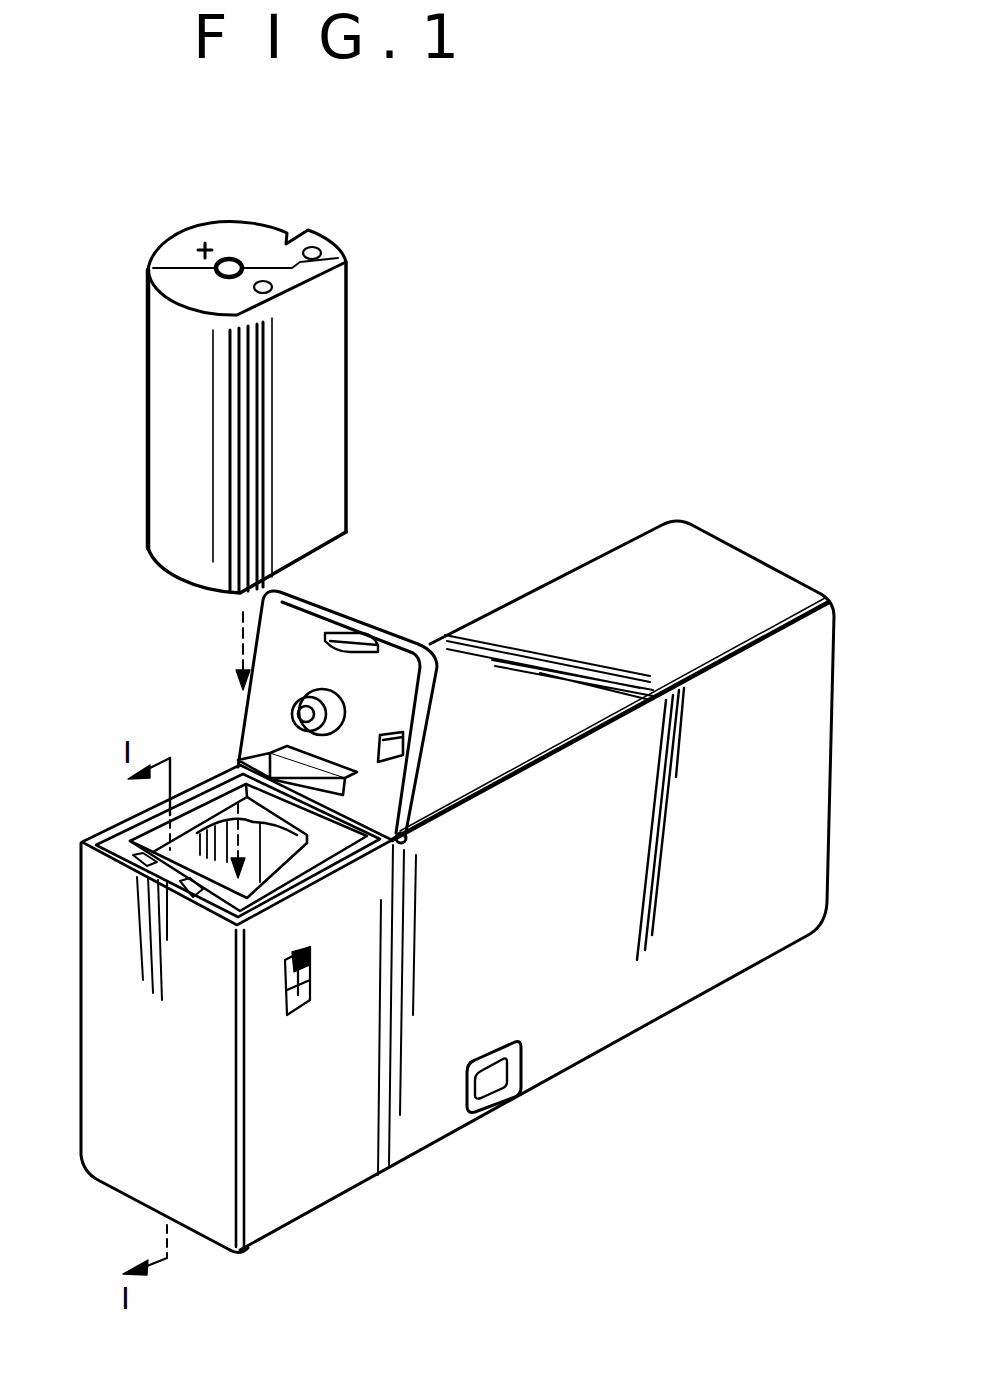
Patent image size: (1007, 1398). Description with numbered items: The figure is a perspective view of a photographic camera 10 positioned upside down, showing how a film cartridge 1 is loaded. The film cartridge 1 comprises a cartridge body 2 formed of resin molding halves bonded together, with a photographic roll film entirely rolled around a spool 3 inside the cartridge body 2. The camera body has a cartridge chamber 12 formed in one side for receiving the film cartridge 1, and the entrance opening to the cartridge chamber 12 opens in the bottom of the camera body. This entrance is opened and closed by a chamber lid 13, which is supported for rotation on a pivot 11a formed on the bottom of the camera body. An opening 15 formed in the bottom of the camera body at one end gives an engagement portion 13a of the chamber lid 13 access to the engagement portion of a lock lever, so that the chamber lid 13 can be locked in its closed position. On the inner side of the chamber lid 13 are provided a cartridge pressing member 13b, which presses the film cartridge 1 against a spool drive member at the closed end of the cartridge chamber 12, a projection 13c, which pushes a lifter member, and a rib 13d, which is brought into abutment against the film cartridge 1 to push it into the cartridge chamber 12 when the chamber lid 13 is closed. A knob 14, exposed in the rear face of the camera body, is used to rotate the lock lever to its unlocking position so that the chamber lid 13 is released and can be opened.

The film cartridge 1 is at (118, 312).
The cartridge body 2 is at (148, 376).
The spool 3 is at (234, 264).
The photographic camera 10 is at (583, 537).
The pivot 11a is at (268, 750).
The cartridge chamber 12 is at (270, 877).
The chamber lid 13 is at (395, 675).
The engagement portion 13a is at (355, 625).
The cartridge pressing member 13b is at (310, 690).
The projection 13c is at (397, 749).
The rib 13d is at (283, 743).
The knob 14 is at (310, 967).
The opening 15 is at (153, 845).